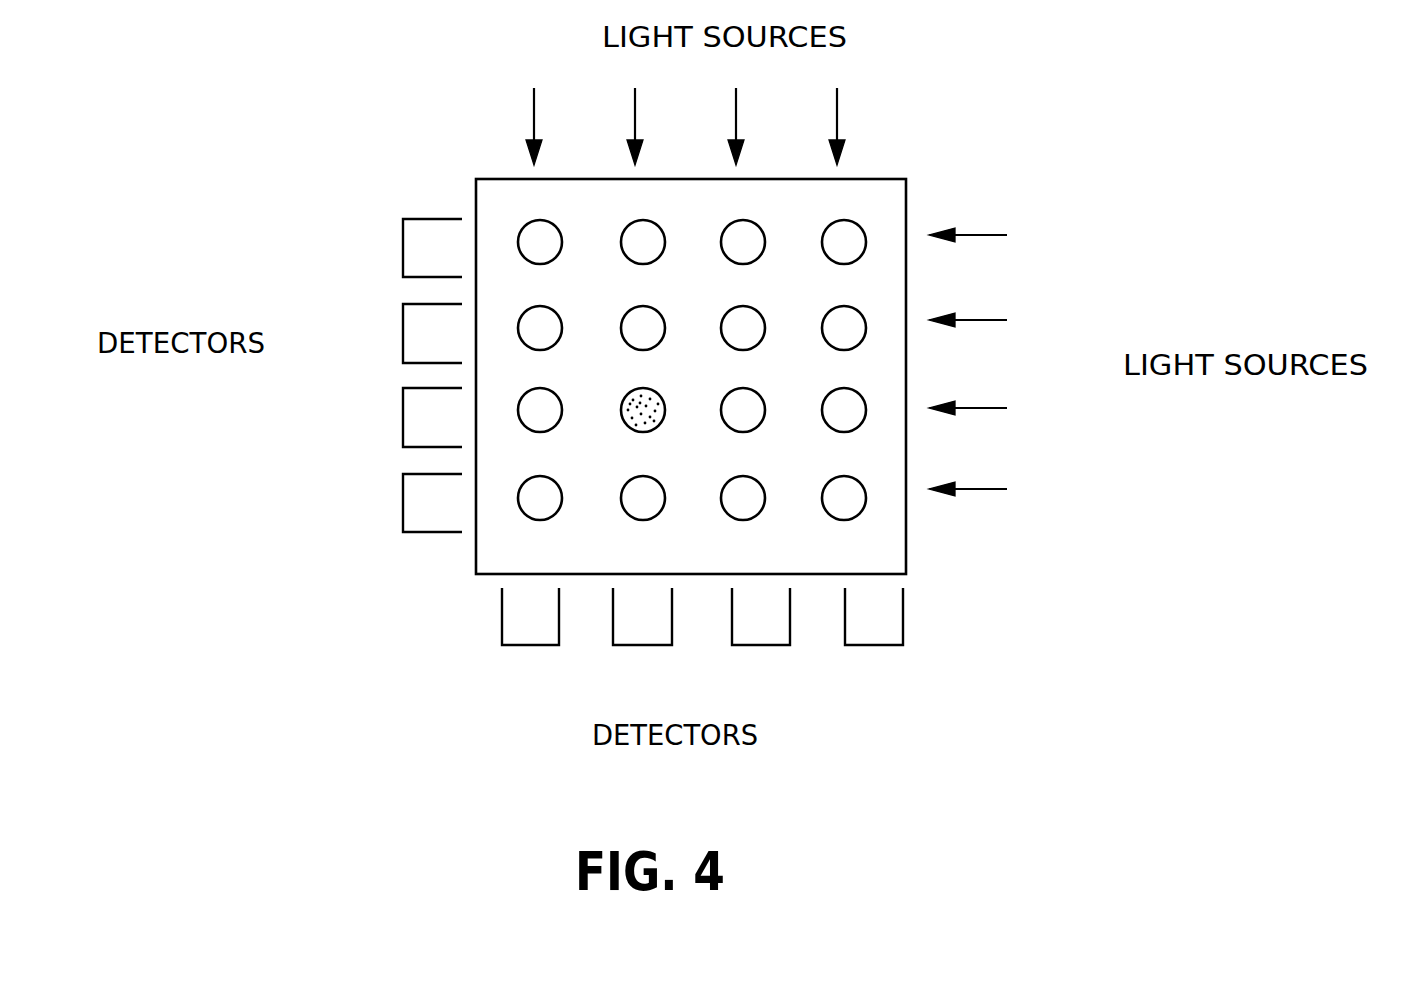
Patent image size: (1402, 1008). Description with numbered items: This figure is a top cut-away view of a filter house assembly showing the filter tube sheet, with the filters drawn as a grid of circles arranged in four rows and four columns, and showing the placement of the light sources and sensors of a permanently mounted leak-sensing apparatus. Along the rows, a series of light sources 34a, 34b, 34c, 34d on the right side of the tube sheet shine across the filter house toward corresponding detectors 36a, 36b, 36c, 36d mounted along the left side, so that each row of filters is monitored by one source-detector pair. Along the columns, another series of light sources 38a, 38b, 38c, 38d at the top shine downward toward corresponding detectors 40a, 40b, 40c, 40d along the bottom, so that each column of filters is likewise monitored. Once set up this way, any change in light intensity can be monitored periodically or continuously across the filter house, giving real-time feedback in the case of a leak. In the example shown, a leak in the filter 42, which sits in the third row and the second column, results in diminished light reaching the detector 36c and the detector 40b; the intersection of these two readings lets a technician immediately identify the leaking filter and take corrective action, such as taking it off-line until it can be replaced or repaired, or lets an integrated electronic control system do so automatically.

The light source 34a is at (997, 236).
The light source 34b is at (997, 321).
The light source 34c is at (992, 408).
The light source 34d is at (997, 490).
The detector 36a is at (403, 251).
The detector 36b is at (403, 334).
The detector 36c is at (403, 418).
The detector 36d is at (403, 503).
The light source 38a is at (534, 98).
The light source 38b is at (635, 100).
The light source 38c is at (736, 100).
The light source 38d is at (837, 100).
The detector 40a is at (502, 620).
The detector 40b is at (613, 618).
The detector 40c is at (732, 618).
The detector 40d is at (845, 618).
The filter 42 is at (653, 399).